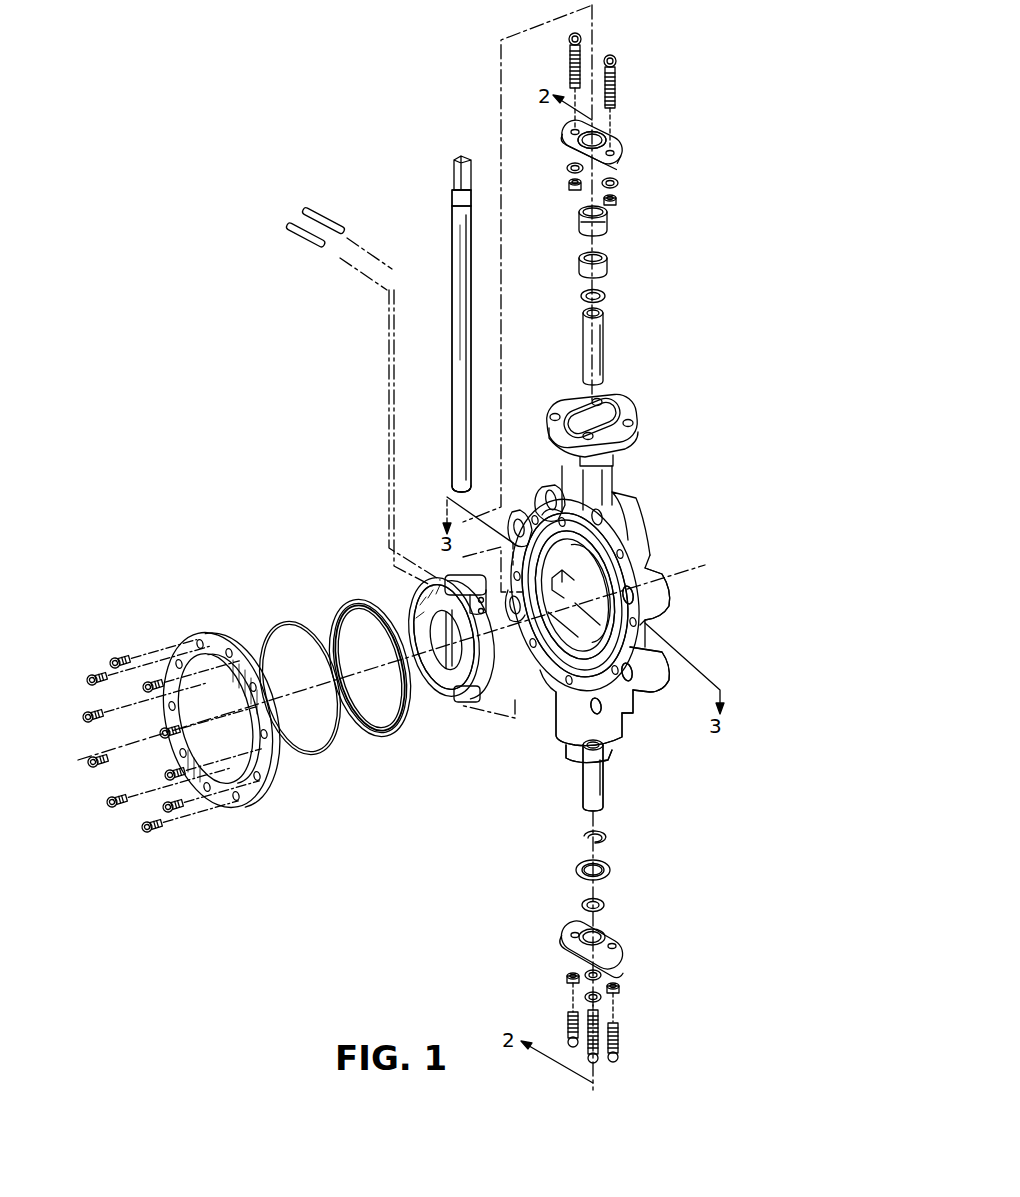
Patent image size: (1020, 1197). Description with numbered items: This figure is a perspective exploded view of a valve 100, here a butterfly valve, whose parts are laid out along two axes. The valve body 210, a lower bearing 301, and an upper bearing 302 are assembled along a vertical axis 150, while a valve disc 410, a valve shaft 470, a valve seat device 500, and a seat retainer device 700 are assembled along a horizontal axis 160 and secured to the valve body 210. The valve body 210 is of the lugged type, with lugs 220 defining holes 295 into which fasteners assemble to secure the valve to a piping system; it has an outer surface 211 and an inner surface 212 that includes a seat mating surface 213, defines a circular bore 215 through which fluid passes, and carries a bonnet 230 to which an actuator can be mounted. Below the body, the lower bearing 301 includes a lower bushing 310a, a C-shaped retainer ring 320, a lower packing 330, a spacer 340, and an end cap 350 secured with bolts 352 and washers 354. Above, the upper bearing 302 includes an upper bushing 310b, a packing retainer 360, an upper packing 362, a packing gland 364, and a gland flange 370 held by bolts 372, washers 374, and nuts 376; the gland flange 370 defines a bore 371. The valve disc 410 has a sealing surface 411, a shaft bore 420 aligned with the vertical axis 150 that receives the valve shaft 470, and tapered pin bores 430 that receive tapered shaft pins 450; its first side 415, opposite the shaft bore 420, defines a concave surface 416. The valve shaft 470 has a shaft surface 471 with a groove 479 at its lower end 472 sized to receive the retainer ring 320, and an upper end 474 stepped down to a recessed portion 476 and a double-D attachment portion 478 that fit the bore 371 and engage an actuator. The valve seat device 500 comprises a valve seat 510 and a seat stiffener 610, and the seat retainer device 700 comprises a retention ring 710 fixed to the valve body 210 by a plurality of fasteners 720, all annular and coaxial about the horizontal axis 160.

The valve 100 is at (737, 77).
The vertical axis 150 is at (598, 812).
The horizontal axis 160 is at (93, 756).
The valve body 210 is at (623, 510).
The outer surface 211 is at (660, 756).
The inner surface 212 is at (580, 756).
The seat mating surface 213 is at (552, 512).
The bore 215 is at (558, 548).
The lugs 220 is at (650, 600).
The bonnet 230 is at (624, 442).
The holes 295 is at (667, 588).
The lower bearing 301 is at (675, 1065).
The upper bearing 302 is at (675, 72).
The lower bushing 310a is at (590, 772).
The upper bushing 310b is at (588, 355).
The retainer ring 320 is at (580, 838).
The lower packing 330 is at (578, 872).
The spacer 340 is at (582, 908).
The end cap 350 is at (565, 945).
The bolts 352 is at (620, 1038).
The washers 354 is at (620, 985).
The packing retainer 360 is at (580, 298).
The upper packing 362 is at (578, 262).
The packing gland 364 is at (580, 218).
The gland flange 370 is at (568, 140).
The bore 371 is at (600, 137).
The bolts 372 is at (616, 82).
The washers 374 is at (618, 183).
The nuts 376 is at (618, 202).
The valve disc 410 is at (462, 712).
The sealing surface 411 is at (466, 705).
The first side 415 is at (410, 625).
The concave surface 416 is at (435, 690).
The shaft bore 420 is at (457, 573).
The pin bores 430 is at (516, 612).
The shaft pin 450 is at (304, 216).
The valve shaft 470 is at (460, 220).
The shaft surface 471 is at (440, 356).
The lower end 472 is at (478, 484).
The upper end 474 is at (460, 158).
The recessed portion 476 is at (458, 200).
The attachment portion 478 is at (458, 178).
The groove 479 is at (453, 480).
The valve seat device 500 is at (381, 550).
The valve seat 510 is at (385, 735).
The seat stiffener 610 is at (312, 757).
The seat retainer device 700 is at (225, 598).
The retention ring 710 is at (242, 805).
The fasteners 720 is at (148, 835).